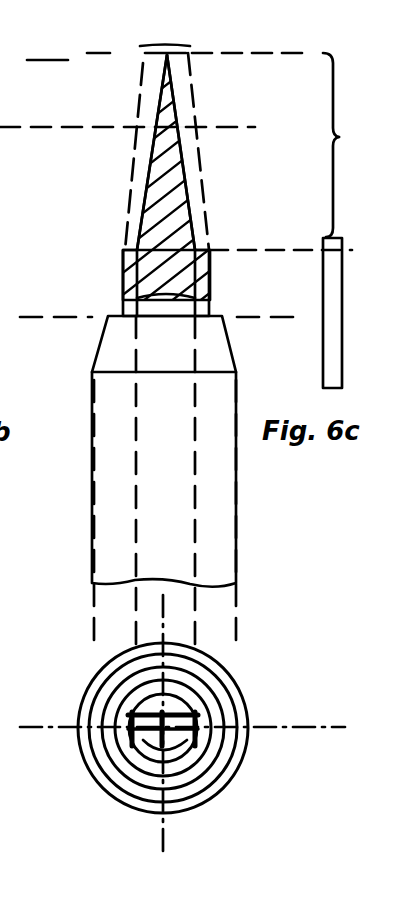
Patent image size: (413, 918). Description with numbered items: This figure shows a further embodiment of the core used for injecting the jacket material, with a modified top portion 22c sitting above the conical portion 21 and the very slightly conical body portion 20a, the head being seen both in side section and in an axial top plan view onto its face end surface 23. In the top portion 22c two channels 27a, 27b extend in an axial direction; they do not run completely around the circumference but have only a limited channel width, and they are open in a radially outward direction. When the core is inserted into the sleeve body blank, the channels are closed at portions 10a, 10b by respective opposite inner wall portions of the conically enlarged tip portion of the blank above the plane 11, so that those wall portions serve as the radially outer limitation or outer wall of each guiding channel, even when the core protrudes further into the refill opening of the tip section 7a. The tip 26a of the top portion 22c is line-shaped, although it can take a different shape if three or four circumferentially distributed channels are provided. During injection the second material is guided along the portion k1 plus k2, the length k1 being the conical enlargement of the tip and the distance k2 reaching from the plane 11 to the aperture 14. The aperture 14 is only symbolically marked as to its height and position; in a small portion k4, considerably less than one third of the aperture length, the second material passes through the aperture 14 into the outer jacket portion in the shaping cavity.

The tip 26a is at (143, 63).
The top portion 22c is at (160, 143).
The axial channel 27a is at (137, 173).
The axial channel 27b is at (197, 180).
The tip section 7a is at (253, 53).
The plane 11 is at (255, 128).
The body portion 20a is at (218, 492).
The length k1 is at (354, 95).
The distance k2 is at (355, 187).
The overlap k4 is at (367, 245).
The aperture 14 is at (335, 290).
The conical portion 21 is at (207, 673).
The face end surface 23 is at (170, 703).
The portion of conical portion 10b is at (220, 747).
The portion of conical portion 10a is at (118, 706).